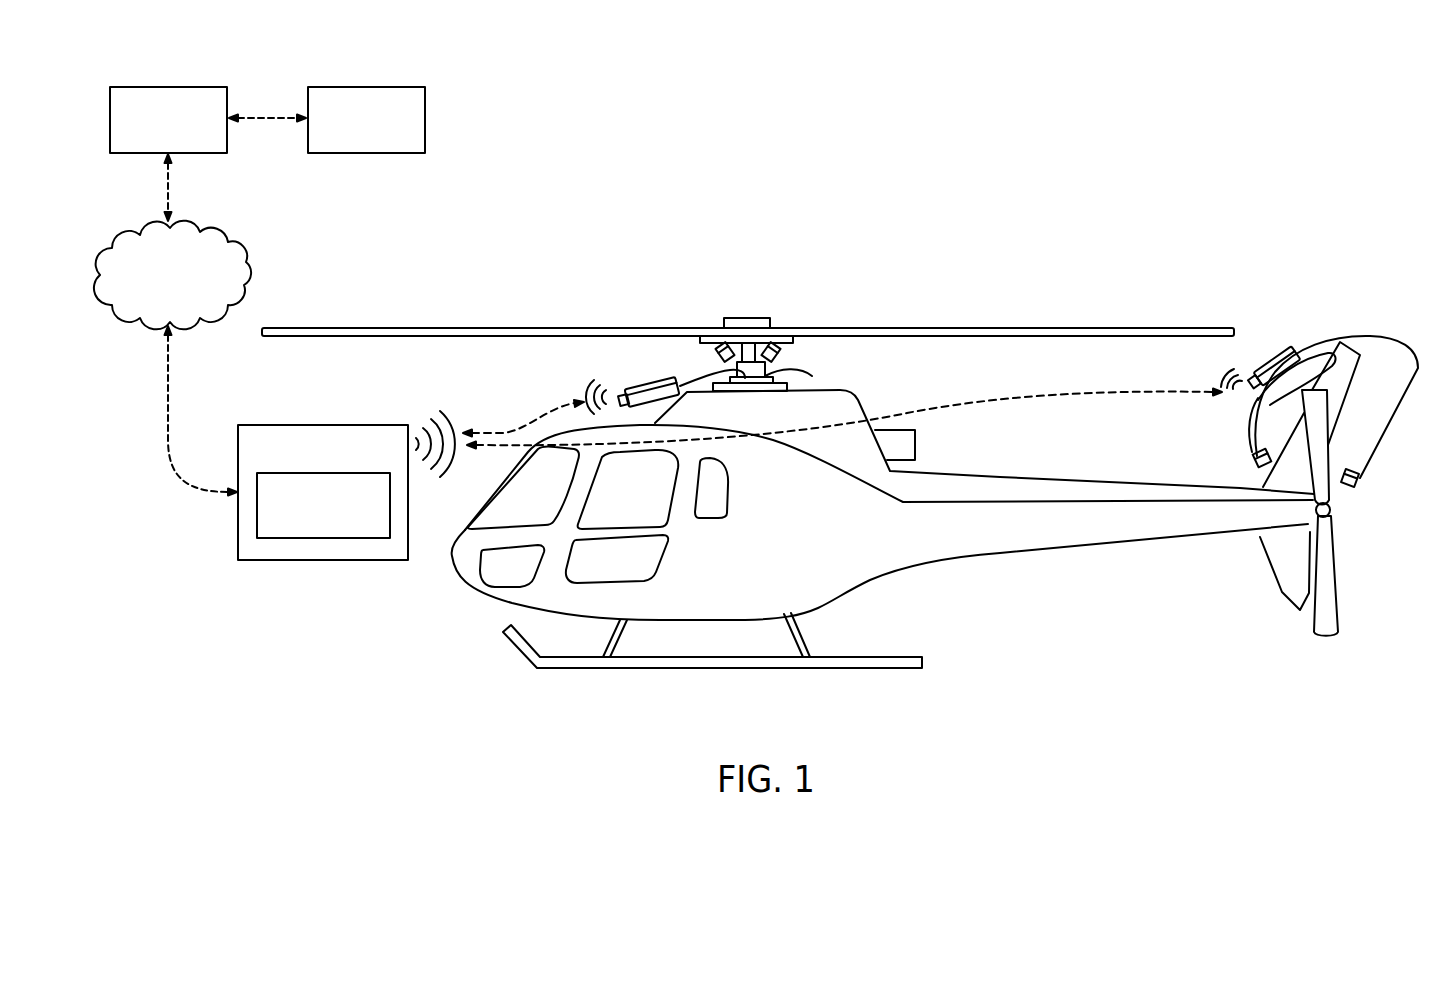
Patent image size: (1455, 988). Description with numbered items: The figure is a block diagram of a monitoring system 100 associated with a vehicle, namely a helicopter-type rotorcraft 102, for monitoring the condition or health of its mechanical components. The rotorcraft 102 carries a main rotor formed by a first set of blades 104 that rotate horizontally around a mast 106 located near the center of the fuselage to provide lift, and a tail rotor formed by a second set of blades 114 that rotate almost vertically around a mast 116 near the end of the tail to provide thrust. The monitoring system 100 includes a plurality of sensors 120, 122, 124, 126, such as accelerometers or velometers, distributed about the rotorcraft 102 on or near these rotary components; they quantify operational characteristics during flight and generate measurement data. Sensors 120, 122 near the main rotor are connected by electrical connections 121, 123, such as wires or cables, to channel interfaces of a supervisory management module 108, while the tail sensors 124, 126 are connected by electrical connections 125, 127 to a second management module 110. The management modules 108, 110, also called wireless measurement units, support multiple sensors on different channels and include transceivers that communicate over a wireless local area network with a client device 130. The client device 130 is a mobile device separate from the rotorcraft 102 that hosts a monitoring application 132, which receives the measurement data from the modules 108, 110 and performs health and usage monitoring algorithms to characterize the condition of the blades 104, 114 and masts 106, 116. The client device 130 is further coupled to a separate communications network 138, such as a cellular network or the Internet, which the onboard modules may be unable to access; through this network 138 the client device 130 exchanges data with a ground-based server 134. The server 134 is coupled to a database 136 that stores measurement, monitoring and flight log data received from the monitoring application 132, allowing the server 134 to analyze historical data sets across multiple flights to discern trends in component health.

The monitoring system 100 is at (975, 183).
The rotorcraft 102 is at (944, 478).
The first set of blades 104 is at (897, 326).
The mast 106 is at (762, 337).
The supervisory management module 108 is at (633, 386).
The supervisory management module 110 is at (1282, 347).
The second set of blades 114 is at (1308, 489).
The mast 116 is at (1315, 513).
The sensor 120 is at (719, 342).
The electrical connection 121 is at (710, 373).
The sensor 122 is at (784, 342).
The electrical connection 123 is at (810, 375).
The sensor 124 is at (1252, 455).
The electrical connection 125 is at (1248, 432).
The sensor 126 is at (1362, 483).
The electrical connection 127 is at (1386, 338).
The client device 130 is at (346, 483).
The monitoring application 132 is at (316, 539).
The server 134 is at (168, 86).
The database 136 is at (427, 122).
The communications network 138 is at (246, 252).